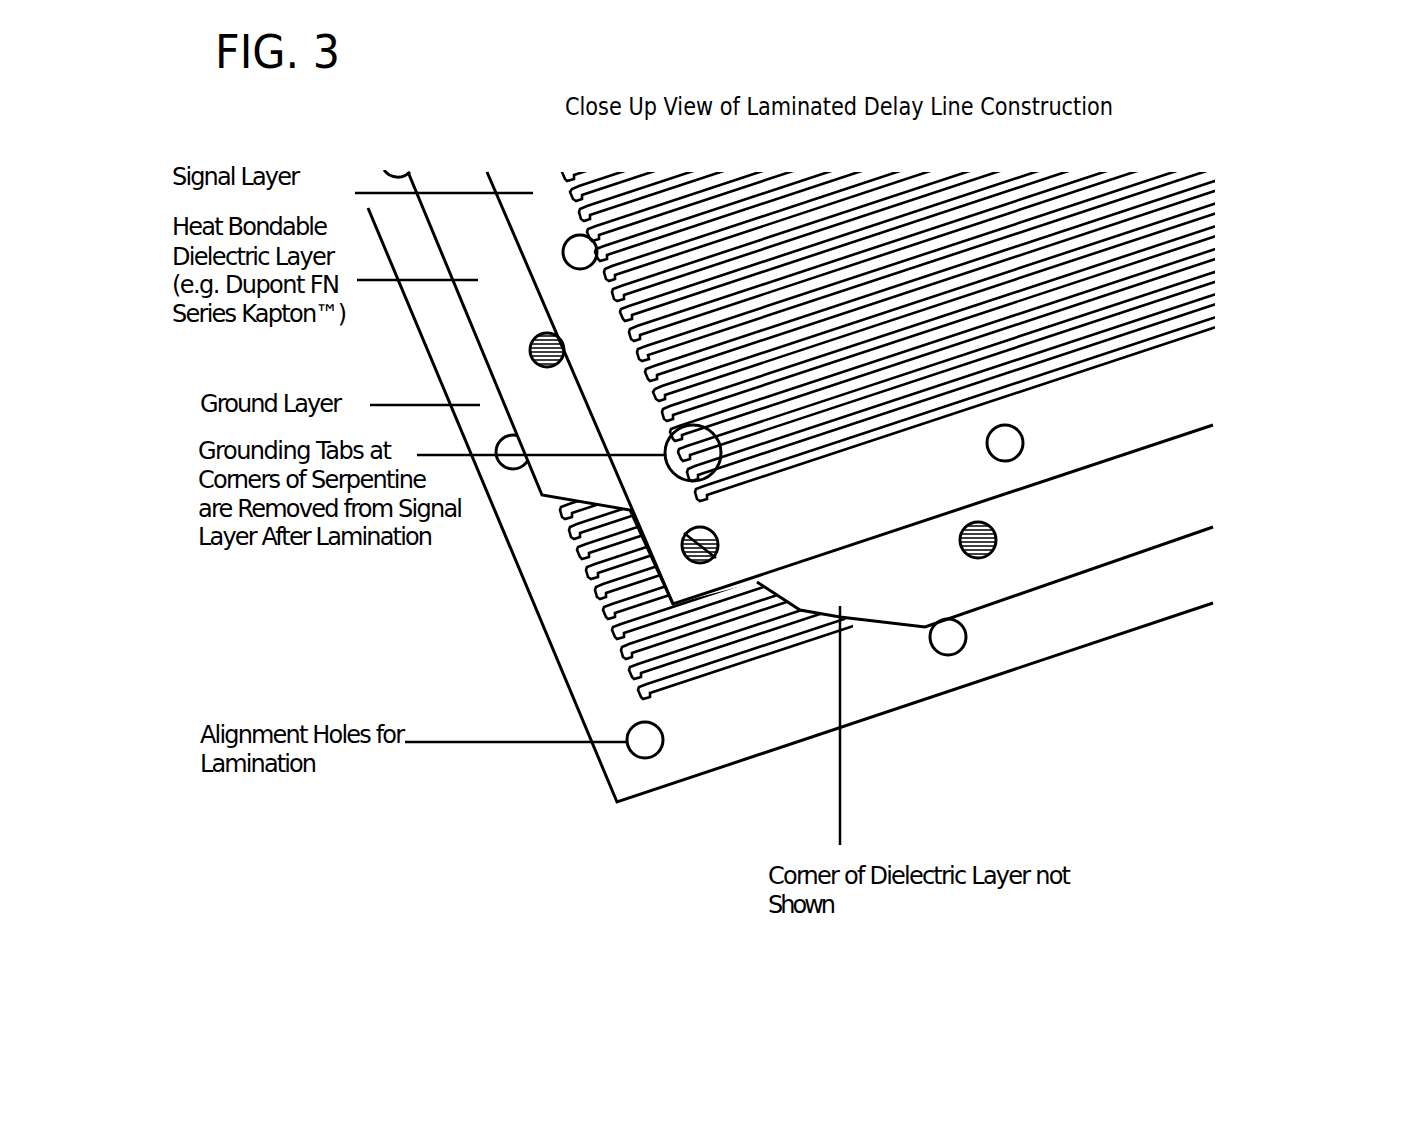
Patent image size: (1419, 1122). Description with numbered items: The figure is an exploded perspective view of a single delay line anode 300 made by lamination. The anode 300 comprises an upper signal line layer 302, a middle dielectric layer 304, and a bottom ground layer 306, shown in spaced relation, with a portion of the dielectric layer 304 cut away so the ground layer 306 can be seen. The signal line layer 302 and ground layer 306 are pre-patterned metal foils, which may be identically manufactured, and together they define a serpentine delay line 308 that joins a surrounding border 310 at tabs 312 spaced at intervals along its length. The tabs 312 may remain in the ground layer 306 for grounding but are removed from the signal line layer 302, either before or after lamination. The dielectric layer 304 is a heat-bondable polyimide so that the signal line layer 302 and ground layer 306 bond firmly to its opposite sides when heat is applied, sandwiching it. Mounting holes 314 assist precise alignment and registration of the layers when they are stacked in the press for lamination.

The delay line anode 300 is at (464, 123).
The upper signal line layer 302 is at (1158, 428).
The middle dielectric layer 304 is at (1163, 520).
The bottom ground layer 306 is at (1158, 588).
The serpentine delay line 308 is at (627, 317).
The border 310 is at (602, 362).
The tabs 312 is at (653, 350).
The mounting holes 314 is at (683, 548).